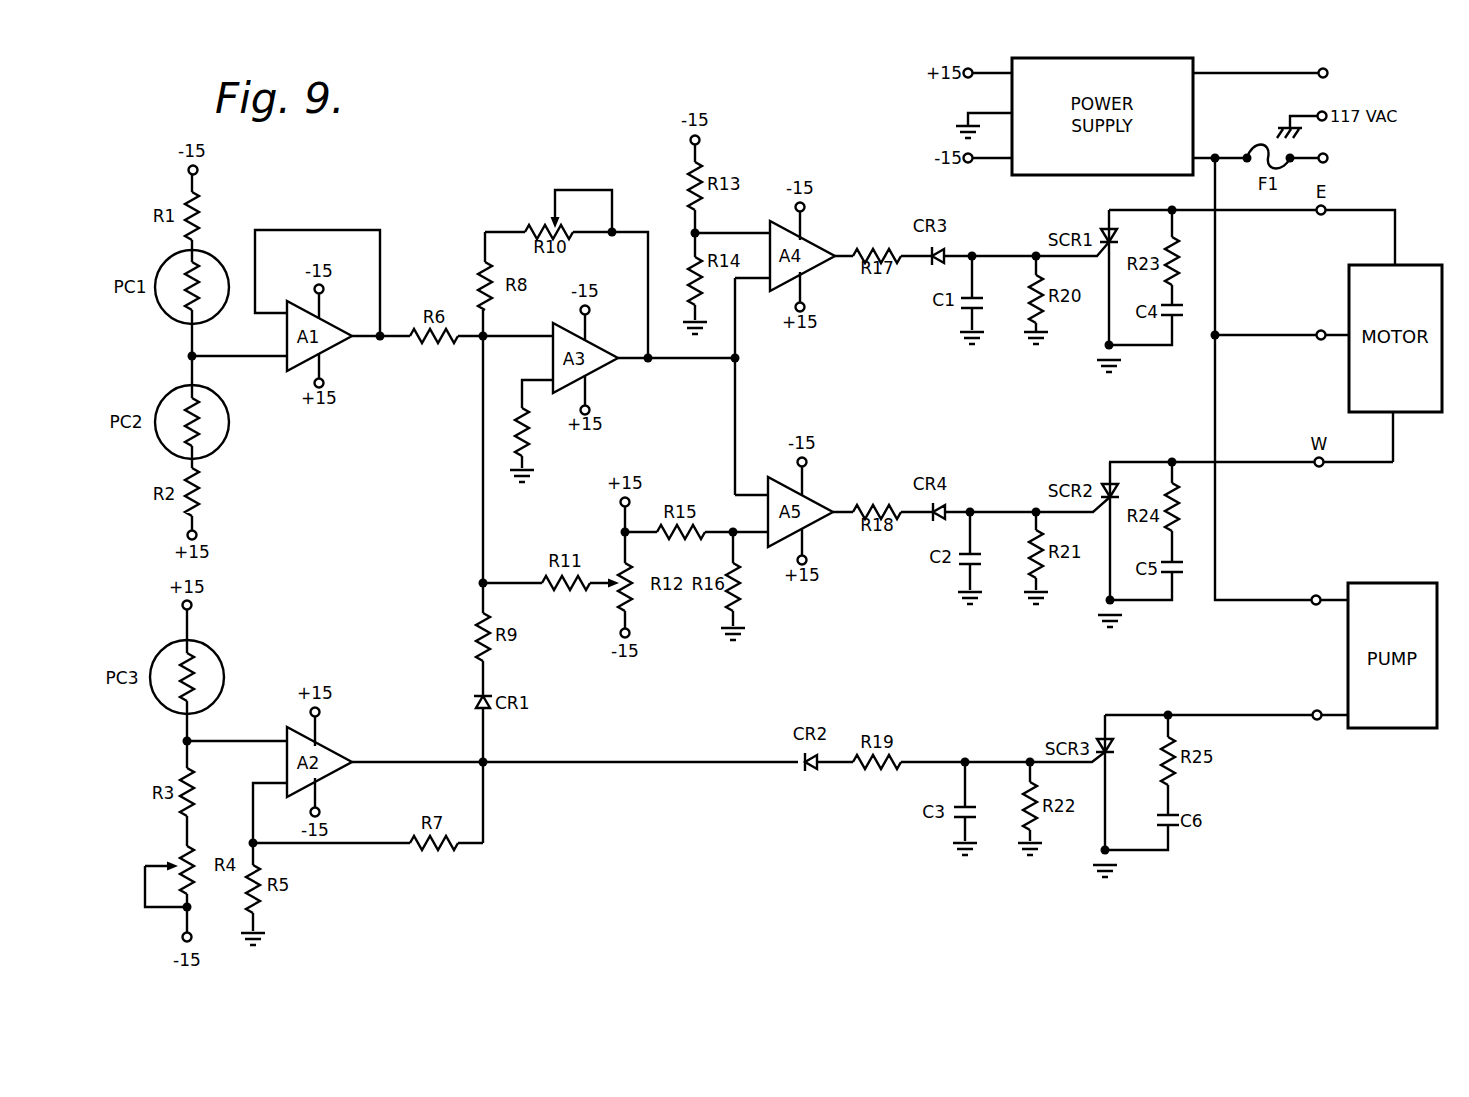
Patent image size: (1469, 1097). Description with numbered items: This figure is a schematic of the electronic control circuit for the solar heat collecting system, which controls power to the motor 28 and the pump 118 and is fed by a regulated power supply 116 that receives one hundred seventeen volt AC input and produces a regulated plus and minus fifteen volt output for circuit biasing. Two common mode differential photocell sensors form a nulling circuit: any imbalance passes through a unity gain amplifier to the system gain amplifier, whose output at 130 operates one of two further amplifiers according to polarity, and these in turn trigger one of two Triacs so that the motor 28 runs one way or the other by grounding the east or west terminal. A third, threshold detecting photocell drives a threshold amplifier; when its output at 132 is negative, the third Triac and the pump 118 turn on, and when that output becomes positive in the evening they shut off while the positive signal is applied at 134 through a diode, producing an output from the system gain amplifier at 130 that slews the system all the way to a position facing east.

The motor 28 is at (1373, 268).
The power supply 116 is at (1062, 164).
The pump 118 is at (1388, 587).
The output of amplifier A3 130 is at (735, 358).
The output of amplifier A2 132 is at (483, 762).
The input point to amplifier A3 134 is at (483, 340).